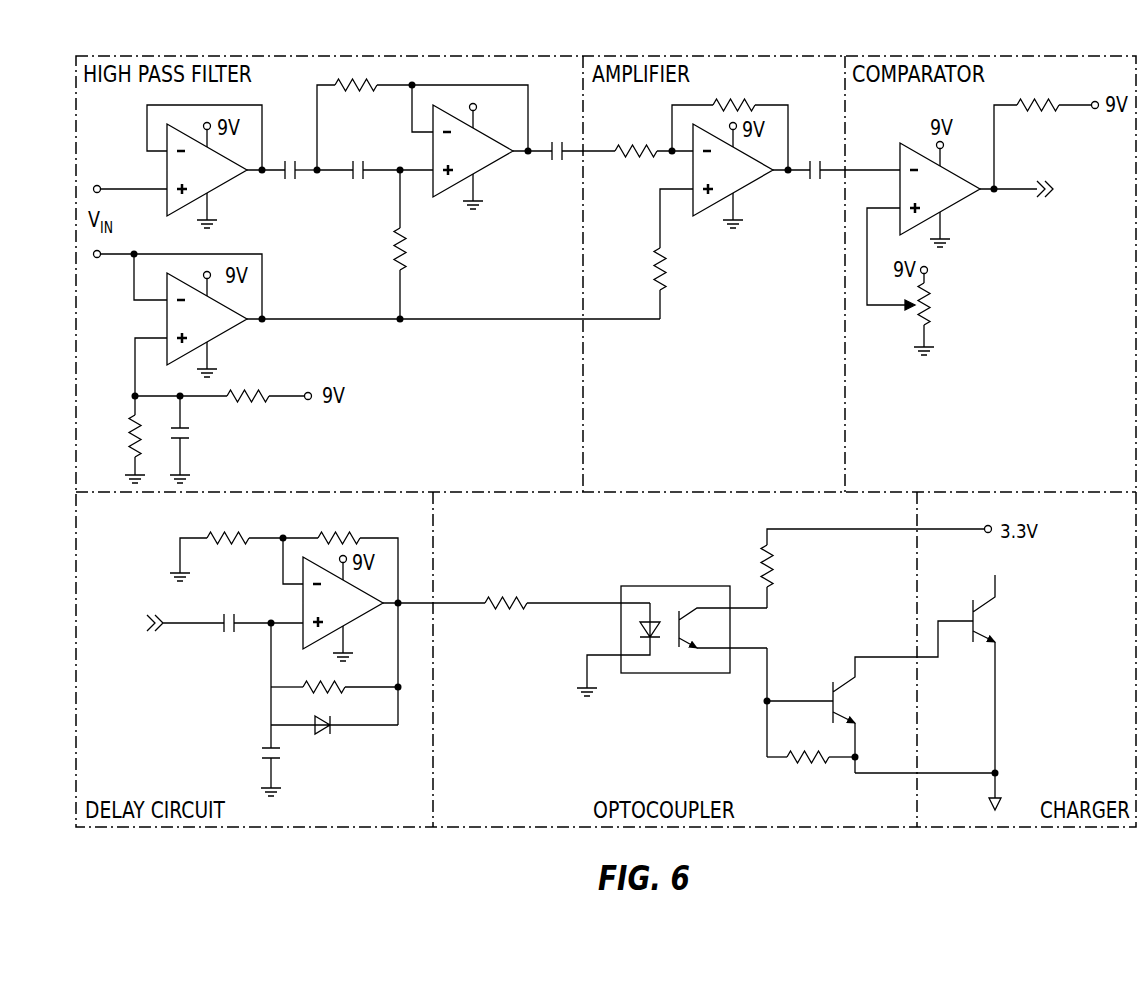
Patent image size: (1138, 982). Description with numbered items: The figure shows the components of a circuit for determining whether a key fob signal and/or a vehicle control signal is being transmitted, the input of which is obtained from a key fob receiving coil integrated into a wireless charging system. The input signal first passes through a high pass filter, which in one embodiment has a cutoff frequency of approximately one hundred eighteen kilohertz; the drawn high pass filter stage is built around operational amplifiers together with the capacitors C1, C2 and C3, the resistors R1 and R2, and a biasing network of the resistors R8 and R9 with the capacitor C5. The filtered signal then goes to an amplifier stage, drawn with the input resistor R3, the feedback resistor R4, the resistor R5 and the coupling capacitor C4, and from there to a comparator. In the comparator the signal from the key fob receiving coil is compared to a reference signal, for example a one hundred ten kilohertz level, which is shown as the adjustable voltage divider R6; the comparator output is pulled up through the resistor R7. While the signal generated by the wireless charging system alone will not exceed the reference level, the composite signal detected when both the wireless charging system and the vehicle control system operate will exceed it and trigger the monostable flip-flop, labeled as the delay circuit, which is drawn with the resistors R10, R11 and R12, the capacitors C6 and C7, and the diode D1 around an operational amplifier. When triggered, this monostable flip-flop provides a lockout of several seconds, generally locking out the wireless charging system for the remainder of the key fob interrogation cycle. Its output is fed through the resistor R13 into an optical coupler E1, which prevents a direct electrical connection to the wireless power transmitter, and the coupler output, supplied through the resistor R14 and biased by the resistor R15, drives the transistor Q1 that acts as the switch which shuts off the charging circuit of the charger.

The resistor R1 (2.5K) R1 is at (392, 244).
The resistor R2 (1.2K) R2 is at (422, 114).
The resistor R3 (100K) R3 is at (654, 149).
The resistor R4 (280K) R4 is at (732, 121).
The resistor R5 (5.1K) R5 is at (665, 254).
The adjustable voltage divider R6 is at (923, 281).
The resistor R7 (10K) R7 is at (1046, 131).
The resistor R8 (100K) R8 is at (115, 439).
The resistor R9 (100K) R9 is at (269, 396).
The resistor R10 (100K) R10 is at (360, 555).
The resistor R11 (200K) R11 is at (244, 544).
The resistor R12 (100K) R12 is at (334, 675).
The resistor R13 (100 ohm) R13 is at (567, 603).
The resistor R14 (100 ohm) R14 is at (854, 567).
The resistor R15 (100K) R15 is at (811, 761).
The capacitor C1 (0.75nf) C1 is at (293, 169).
The capacitor C2 (0.75nf) C2 is at (366, 169).
The capacitor C3 (0.01uf) C3 is at (570, 151).
The capacitor C4 (6.8nf) C4 is at (848, 169).
The capacitor C5 (2.5uf) C5 is at (200, 439).
The capacitor C6 (6.8nf) C6 is at (255, 652).
The capacitor C7 is at (255, 767).
The diode D1 is at (334, 739).
The optocoupler E1 is at (672, 627).
The transistor Q1 is at (870, 697).